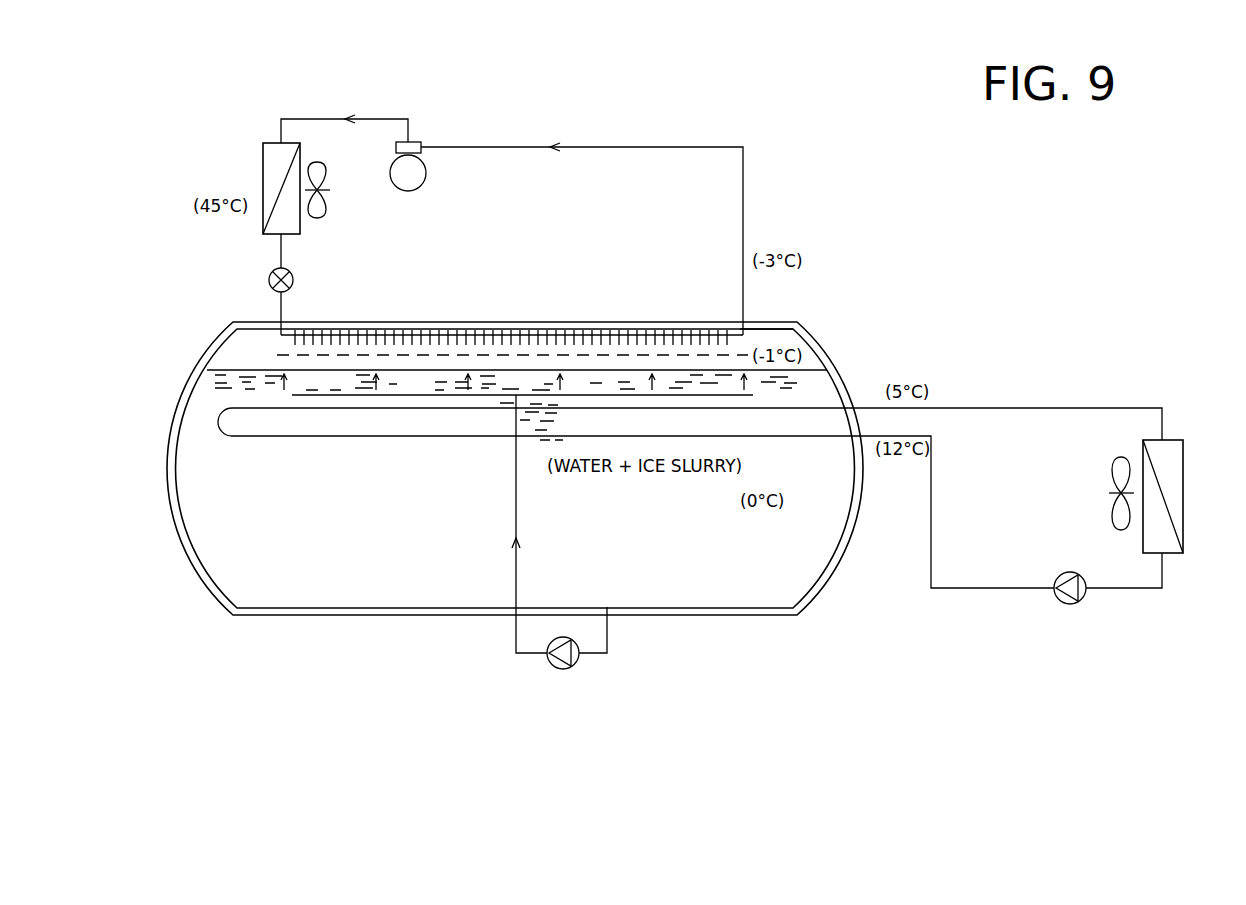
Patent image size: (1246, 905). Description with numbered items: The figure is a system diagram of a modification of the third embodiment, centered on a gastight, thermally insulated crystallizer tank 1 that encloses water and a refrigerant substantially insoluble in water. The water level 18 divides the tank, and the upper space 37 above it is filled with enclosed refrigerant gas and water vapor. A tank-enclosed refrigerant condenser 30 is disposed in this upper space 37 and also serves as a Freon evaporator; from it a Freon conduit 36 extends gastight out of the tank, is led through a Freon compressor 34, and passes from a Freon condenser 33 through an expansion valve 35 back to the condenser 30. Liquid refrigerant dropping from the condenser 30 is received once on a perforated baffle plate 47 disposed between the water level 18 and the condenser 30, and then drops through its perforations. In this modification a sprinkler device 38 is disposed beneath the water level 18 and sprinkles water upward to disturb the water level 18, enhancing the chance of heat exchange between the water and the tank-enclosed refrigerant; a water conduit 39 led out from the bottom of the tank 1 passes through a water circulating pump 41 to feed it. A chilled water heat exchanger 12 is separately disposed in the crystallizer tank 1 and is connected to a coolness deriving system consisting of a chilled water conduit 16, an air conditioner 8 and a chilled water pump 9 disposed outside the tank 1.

The crystallizer tank 1 is at (725, 616).
The air conditioner 8 is at (1185, 447).
The chilled water pump 9 is at (1070, 605).
The chilled water heat exchanger 12 is at (822, 436).
The chilled water conduit 16 is at (1012, 404).
The water level 18 is at (812, 370).
The tank-enclosed refrigerant condenser 30 is at (512, 340).
The Freon condenser 33 is at (263, 151).
The Freon compressor 34 is at (426, 168).
The expansion valve 35 is at (293, 277).
The Freon conduit 36 is at (663, 147).
The upper space 37 is at (757, 337).
The sprinkler device 38 is at (292, 395).
The water conduit 39 is at (607, 628).
The water circulating pump 41 is at (553, 667).
The perforated baffle plate 47 is at (272, 356).